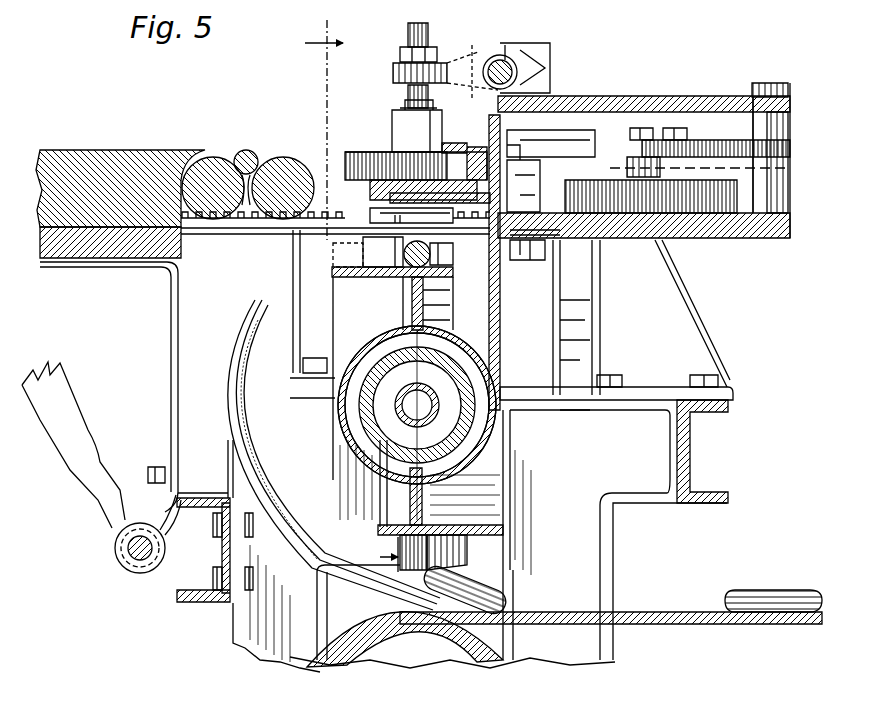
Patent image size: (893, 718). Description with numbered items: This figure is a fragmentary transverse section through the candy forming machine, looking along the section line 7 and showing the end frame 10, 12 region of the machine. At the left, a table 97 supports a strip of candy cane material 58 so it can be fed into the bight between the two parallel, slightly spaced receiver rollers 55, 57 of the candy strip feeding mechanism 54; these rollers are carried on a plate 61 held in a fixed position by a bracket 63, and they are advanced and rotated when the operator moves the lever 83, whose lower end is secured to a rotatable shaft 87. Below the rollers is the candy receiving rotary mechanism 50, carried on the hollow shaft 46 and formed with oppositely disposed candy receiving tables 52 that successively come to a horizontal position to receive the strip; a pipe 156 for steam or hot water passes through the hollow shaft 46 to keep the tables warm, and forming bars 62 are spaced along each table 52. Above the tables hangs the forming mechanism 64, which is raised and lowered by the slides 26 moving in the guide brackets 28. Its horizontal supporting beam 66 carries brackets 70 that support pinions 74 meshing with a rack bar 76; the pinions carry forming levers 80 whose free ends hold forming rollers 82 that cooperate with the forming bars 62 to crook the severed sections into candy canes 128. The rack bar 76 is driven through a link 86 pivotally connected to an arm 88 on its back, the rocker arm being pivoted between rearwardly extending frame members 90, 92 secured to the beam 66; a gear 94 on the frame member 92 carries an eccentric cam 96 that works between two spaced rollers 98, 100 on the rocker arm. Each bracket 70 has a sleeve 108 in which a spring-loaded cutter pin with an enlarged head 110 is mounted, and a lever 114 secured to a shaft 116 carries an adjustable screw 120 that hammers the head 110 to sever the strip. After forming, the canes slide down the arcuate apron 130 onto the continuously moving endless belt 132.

The section line 7 is at (351, 291).
The end frame 10 is at (613, 550).
The end frame 12 is at (258, 620).
The slide 26 is at (548, 50).
The guide bracket 28 is at (585, 304).
The hollow shaft 46 is at (470, 365).
The candy receiving rotary mechanism 50 is at (348, 172).
The candy receiving table 52 is at (378, 278).
The candy strip feeding mechanism 54 is at (177, 142).
The receiver roller 55 is at (280, 160).
The receiver roller 57 is at (217, 160).
The strip of candy cane material 58 is at (248, 150).
The plate 61 is at (190, 228).
The forming bar 62 is at (375, 262).
The bracket 63 is at (290, 278).
The forming mechanism 64 is at (385, 128).
The horizontal supporting beam 66 is at (526, 262).
The bracket 70 is at (440, 190).
The pinion 74 is at (360, 160).
The rack bar 76 is at (470, 150).
The forming lever 80 is at (380, 220).
The forming roller 82 is at (292, 256).
The lever 83 is at (58, 395).
The link 86 is at (545, 160).
The rotatable shaft 87 is at (133, 552).
The arm 88 is at (560, 213).
The frame member 90 is at (670, 97).
The frame member 92 is at (738, 238).
The gear 94 is at (735, 200).
The cam 96 is at (710, 160).
The table 97 is at (55, 158).
The roller 98 is at (640, 165).
The roller 100 is at (770, 168).
The sleeve 108 is at (403, 121).
The enlarged head 110 is at (436, 104).
The lever 114 is at (462, 68).
The shaft 116 is at (506, 66).
The adjustable screw 120 is at (410, 30).
The candy cane 128 is at (492, 592).
The apron 130 is at (258, 392).
The endless belt 132 is at (698, 611).
The pipe 156 is at (432, 412).